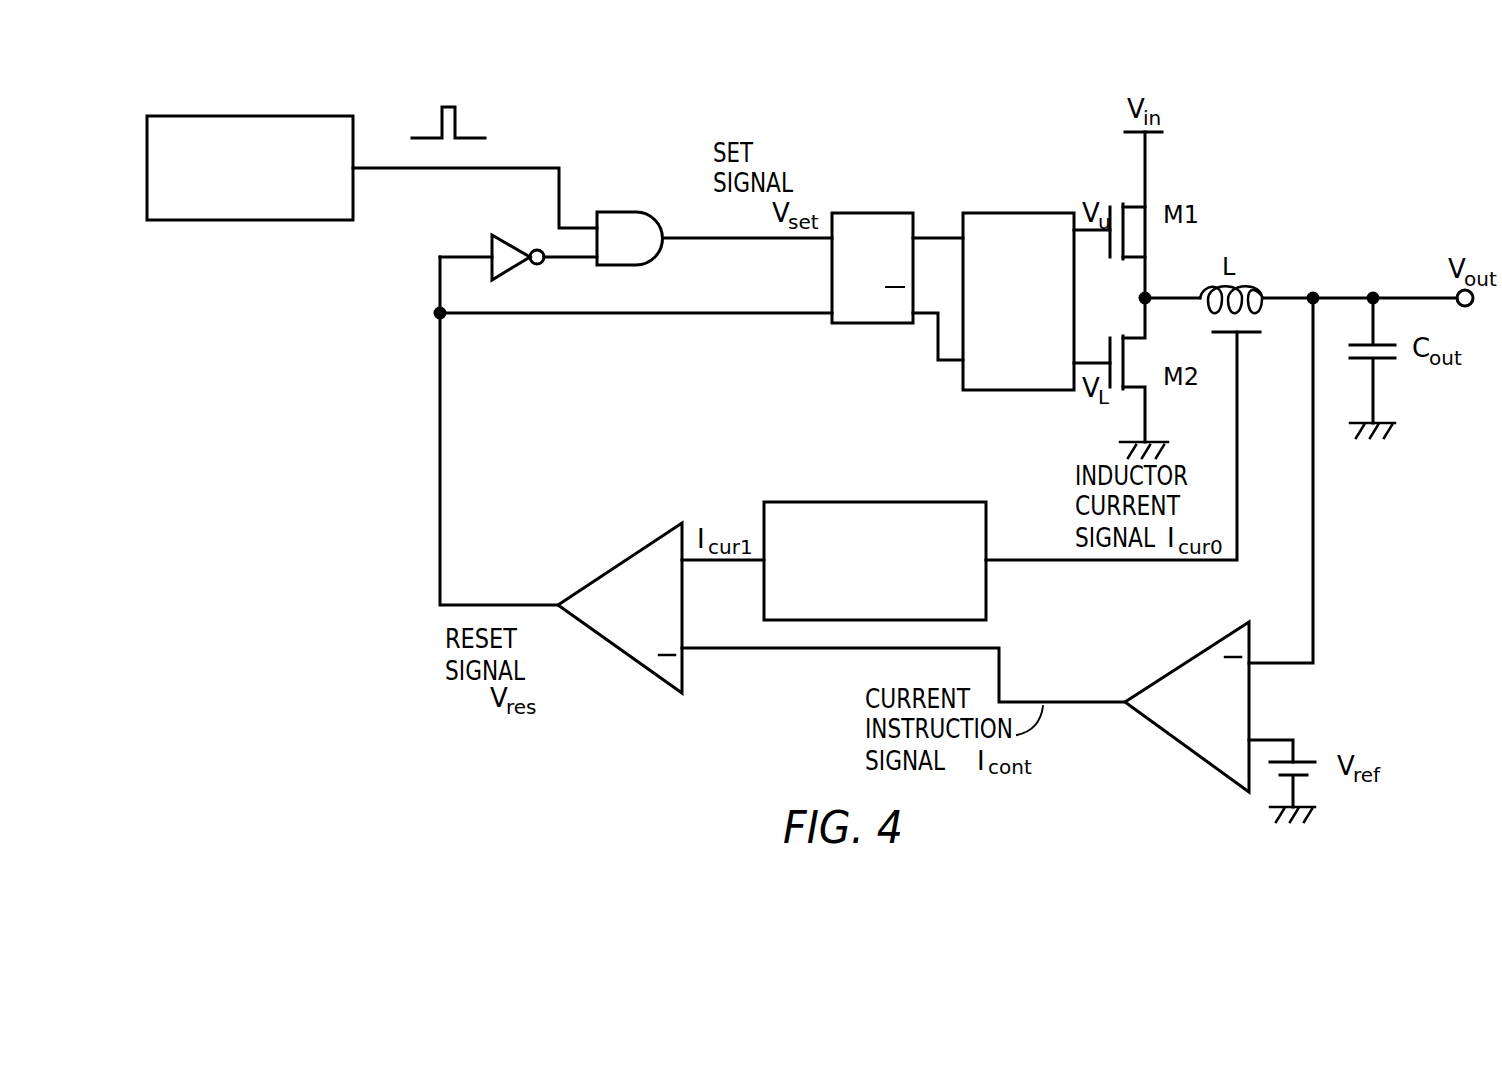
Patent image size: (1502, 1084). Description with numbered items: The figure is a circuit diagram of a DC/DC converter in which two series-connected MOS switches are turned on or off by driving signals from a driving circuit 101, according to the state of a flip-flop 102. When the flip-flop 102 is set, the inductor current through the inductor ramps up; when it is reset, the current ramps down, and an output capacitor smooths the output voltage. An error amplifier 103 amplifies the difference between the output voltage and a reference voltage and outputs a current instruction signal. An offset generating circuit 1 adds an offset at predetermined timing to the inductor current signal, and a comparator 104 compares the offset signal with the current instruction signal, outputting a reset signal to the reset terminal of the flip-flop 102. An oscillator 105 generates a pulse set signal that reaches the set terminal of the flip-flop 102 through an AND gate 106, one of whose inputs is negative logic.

The offset generating circuit 1 is at (984, 527).
The driving circuit 101 is at (1069, 237).
The flip-flop 102 is at (855, 213).
The error amplifier 103 is at (1233, 715).
The comparator 104 is at (647, 617).
The oscillator 105 is at (351, 142).
The AND gate 106 is at (640, 251).